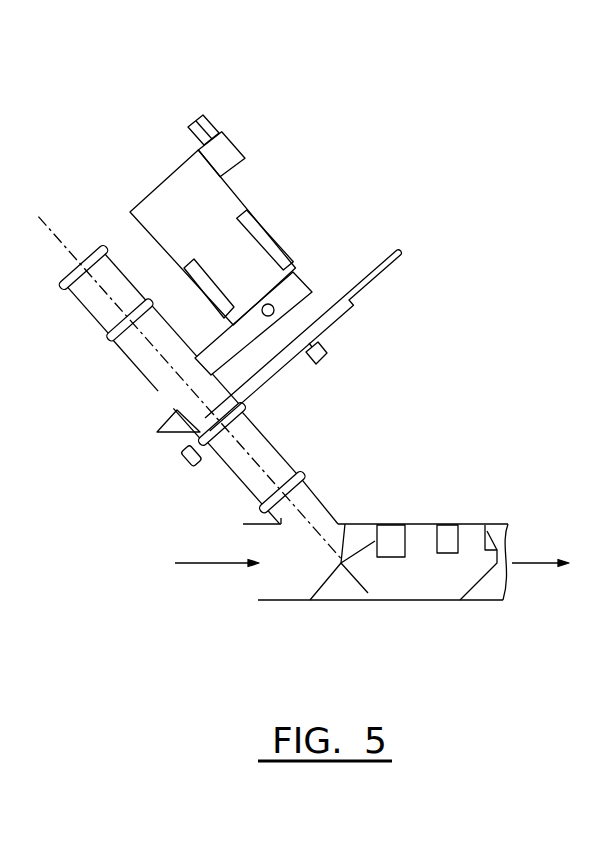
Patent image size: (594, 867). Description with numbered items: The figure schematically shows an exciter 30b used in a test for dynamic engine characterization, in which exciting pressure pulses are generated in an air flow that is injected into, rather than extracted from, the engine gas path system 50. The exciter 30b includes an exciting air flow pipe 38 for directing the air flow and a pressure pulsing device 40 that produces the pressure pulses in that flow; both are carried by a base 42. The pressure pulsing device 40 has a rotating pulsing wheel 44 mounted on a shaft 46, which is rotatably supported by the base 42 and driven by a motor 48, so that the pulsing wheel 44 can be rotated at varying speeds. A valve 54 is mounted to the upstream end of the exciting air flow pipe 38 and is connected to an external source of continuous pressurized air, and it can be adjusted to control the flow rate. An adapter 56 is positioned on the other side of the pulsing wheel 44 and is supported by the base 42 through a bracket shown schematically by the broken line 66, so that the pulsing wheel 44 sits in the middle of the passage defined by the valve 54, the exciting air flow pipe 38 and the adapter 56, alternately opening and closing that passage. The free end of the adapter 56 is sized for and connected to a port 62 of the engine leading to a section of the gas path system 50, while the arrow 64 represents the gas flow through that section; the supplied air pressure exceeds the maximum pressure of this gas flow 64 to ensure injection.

The exciter 30b is at (305, 140).
The exciting air flow pipe 38 is at (127, 364).
The pressure pulsing device 40 is at (286, 230).
The base 42 is at (170, 434).
The pulsing wheel 44 is at (402, 262).
The shaft 46 is at (326, 366).
The motor 48 is at (158, 182).
The gas path system 50 is at (295, 586).
The valve 54 is at (80, 302).
The adapter 56 is at (275, 446).
The port 62 is at (322, 505).
The gas flow 64 is at (212, 564).
The bracket 66 is at (183, 457).